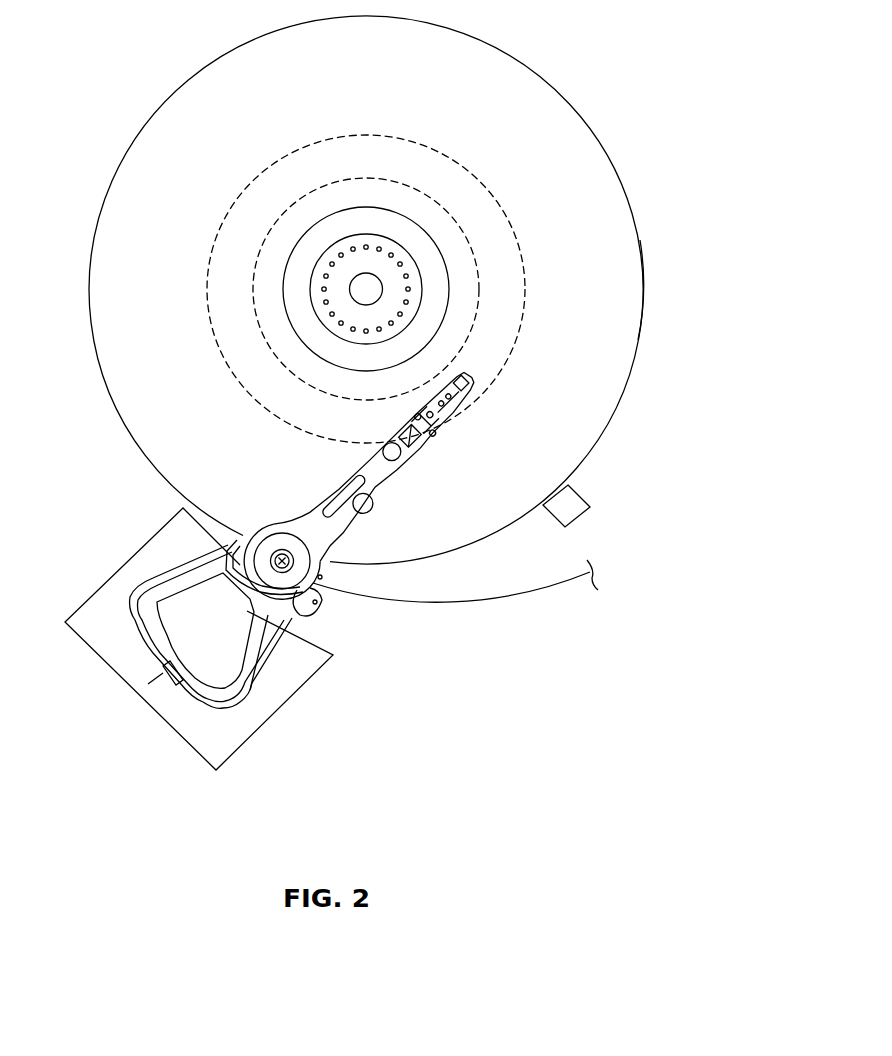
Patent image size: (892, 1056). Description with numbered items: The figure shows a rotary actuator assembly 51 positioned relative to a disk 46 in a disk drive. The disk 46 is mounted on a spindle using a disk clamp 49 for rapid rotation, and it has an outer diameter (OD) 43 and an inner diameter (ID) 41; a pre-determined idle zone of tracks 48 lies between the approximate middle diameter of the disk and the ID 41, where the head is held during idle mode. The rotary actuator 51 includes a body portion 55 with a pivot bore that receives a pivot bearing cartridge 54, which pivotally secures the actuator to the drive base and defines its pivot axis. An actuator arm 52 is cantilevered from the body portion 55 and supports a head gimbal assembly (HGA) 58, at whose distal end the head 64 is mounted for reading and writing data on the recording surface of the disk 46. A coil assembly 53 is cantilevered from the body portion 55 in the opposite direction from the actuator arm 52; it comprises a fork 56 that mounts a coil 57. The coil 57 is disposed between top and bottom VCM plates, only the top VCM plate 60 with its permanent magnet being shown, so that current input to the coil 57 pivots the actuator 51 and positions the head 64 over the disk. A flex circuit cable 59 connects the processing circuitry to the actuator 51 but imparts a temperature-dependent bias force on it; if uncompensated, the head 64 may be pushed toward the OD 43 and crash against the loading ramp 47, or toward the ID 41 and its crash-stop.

The inner diameter (ID) 41 is at (415, 218).
The outer diameter (OD) 43 is at (644, 283).
The disk 46 is at (112, 337).
The loading ramp 47 is at (585, 514).
The pre-determined idle zone of tracks 48 is at (205, 263).
The disk clamp 49 is at (310, 295).
The rotary actuator assembly 51 is at (366, 658).
The actuator arm 52 is at (333, 541).
The coil assembly 53 is at (176, 554).
The pivot bearing cartridge 54 is at (258, 530).
The body portion 55 is at (305, 590).
The fork 56 is at (270, 640).
The coil 57 is at (235, 690).
The head gimbal assembly (HGA) 58 is at (452, 408).
The flex circuit cable 59 is at (468, 605).
The VCM plate 60 is at (98, 598).
The head 64 is at (476, 383).